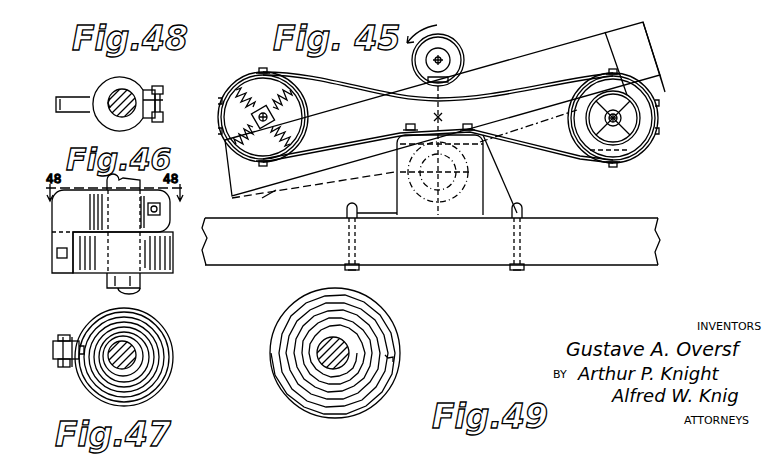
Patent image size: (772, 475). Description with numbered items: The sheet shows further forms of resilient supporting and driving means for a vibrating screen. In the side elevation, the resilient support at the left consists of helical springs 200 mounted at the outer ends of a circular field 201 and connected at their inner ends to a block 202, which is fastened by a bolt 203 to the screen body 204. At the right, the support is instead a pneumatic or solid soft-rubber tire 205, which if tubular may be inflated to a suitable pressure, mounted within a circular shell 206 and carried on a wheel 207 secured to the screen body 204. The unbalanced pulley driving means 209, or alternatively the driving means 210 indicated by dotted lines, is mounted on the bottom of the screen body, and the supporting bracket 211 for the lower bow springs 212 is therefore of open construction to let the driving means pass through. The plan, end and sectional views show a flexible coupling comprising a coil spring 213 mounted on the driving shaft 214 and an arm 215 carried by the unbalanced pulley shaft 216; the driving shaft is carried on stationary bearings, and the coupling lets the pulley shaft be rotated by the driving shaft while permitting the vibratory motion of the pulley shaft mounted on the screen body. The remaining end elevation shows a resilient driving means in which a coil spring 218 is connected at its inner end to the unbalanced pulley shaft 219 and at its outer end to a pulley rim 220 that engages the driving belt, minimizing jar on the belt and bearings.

In FIG. 45, the helical springs 200 is at (228, 92).
In FIG. 45, the circular field 201 is at (309, 121).
In FIG. 45, the block 202 is at (286, 96).
In FIG. 45, the bolt 203 is at (268, 113).
In FIG. 45, the screen body 204 is at (548, 50).
In FIG. 45, the tire 205 is at (648, 125).
In FIG. 45, the circular shell 206 is at (641, 82).
In FIG. 45, the wheel 207 is at (625, 112).
In FIG. 45, the driving means 209 is at (456, 45).
In FIG. 45, the driving means (dotted position) 210 is at (486, 180).
In FIG. 45, the supporting bracket 211 is at (496, 200).
In FIG. 45, the lower bow springs 212 is at (575, 158).
In FIG. 46, the coil spring 213 is at (155, 275).
In FIG. 47, the coil spring 213 is at (168, 337).
In FIG. 46, the driving shaft 214 is at (143, 290).
In FIG. 48, the arm 215 is at (81, 97).
In FIG. 46, the arm 215 is at (111, 231).
In FIG. 47, the arm 215 is at (80, 344).
In FIG. 48, the unbalanced pulley shaft 216 is at (112, 129).
In FIG. 46, the unbalanced pulley shaft 216 is at (140, 185).
In FIG. 49, the coil spring 218 is at (388, 358).
In FIG. 49, the unbalanced pulley shaft 219 is at (347, 363).
In FIG. 49, the pulley rim 220 is at (303, 407).